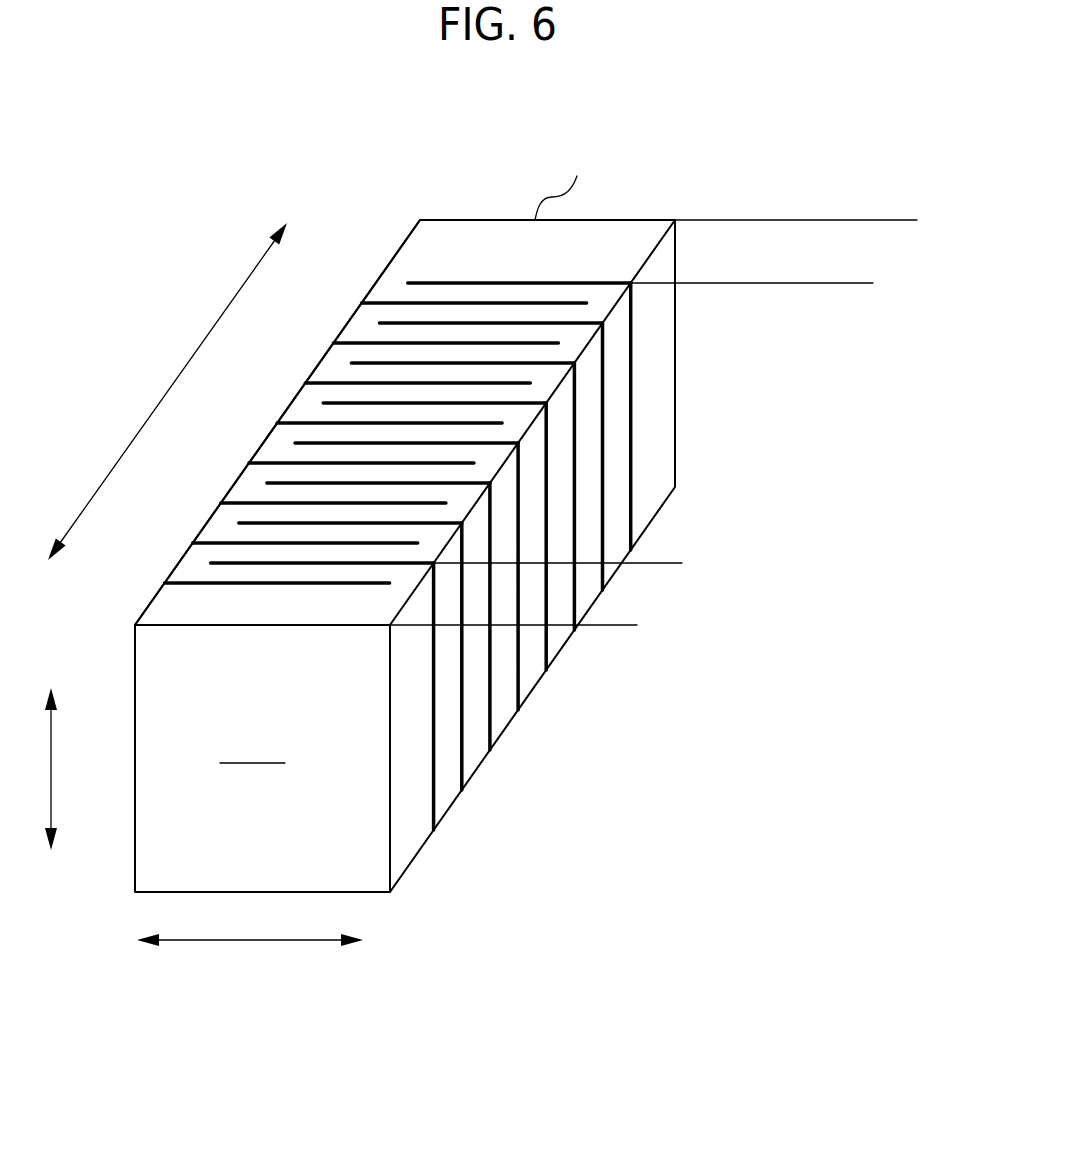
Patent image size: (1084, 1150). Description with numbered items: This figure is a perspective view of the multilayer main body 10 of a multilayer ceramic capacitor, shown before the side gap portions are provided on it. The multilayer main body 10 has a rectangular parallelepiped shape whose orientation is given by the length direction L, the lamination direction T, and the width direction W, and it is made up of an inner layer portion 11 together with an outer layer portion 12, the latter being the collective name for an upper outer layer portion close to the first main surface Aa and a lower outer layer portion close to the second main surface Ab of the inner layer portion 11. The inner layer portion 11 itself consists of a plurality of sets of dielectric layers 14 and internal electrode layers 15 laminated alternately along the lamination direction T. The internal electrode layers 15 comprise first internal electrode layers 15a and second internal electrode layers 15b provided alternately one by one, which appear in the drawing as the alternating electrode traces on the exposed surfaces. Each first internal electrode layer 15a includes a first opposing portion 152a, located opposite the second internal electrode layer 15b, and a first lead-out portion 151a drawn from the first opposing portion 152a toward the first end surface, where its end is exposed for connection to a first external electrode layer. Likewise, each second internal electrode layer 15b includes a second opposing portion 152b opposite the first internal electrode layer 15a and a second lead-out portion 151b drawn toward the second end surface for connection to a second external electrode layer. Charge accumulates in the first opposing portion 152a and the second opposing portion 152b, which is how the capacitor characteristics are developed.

The multilayer main body 10 is at (665, 150).
The inner layer portion 11 is at (913, 252).
The outer layer portion 12 is at (917, 220).
The dielectric layer 14 is at (300, 411).
The internal electrode layer 15 is at (435, 473).
The first internal electrode layer 15a is at (443, 137).
The second internal electrode layer 15b is at (593, 770).
The first lead-out portion 151a is at (388, 302).
The first opposing portion 152a is at (423, 302).
The second lead-out portion 151b is at (418, 563).
The second opposing portion 152b is at (352, 563).